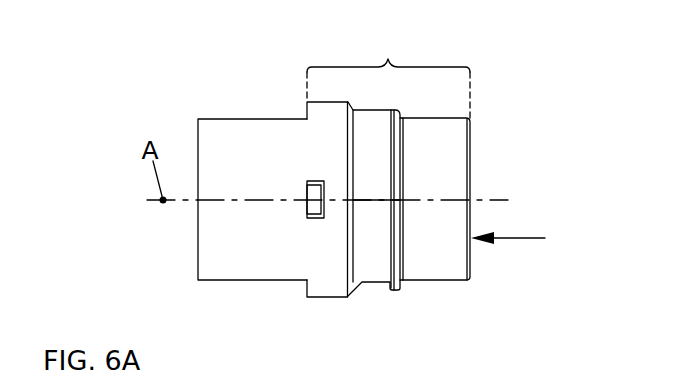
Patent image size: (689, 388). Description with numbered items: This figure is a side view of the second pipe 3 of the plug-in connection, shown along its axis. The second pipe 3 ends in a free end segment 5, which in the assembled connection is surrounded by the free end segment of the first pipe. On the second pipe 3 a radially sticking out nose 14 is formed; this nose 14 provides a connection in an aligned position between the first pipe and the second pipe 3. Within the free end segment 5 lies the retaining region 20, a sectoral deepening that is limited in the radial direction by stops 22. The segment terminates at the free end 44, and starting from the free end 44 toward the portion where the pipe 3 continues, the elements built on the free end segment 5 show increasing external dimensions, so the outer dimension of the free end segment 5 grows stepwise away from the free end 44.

The second pipe 3 is at (248, 119).
The free end segment of the second pipe 5 is at (417, 67).
The radial sticking out nose 14 is at (316, 207).
The retaining region 20 is at (377, 253).
The stops 22 is at (377, 200).
The free end 44 is at (525, 239).